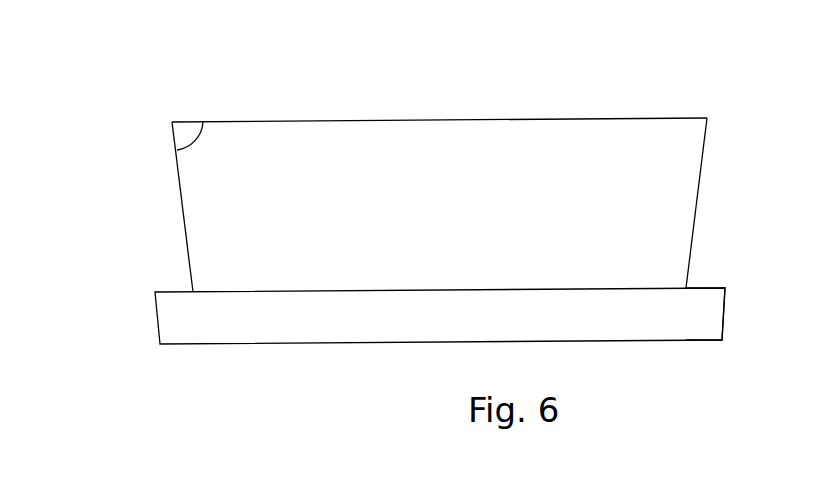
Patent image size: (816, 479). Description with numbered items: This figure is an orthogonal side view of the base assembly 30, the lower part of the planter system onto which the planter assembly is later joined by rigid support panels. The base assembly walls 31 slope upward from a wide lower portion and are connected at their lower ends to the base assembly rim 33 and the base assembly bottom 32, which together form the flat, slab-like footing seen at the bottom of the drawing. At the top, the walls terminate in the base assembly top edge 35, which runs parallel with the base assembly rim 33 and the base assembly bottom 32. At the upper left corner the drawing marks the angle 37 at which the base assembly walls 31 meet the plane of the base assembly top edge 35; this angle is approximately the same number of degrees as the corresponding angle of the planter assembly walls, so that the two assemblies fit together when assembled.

The base assembly 30 is at (160, 157).
The base assembly walls 31 is at (200, 236).
The base assembly bottom 32 is at (232, 344).
The base assembly rim 33 is at (685, 320).
The base assembly top edge 35 is at (411, 119).
The angle 37 is at (198, 141).